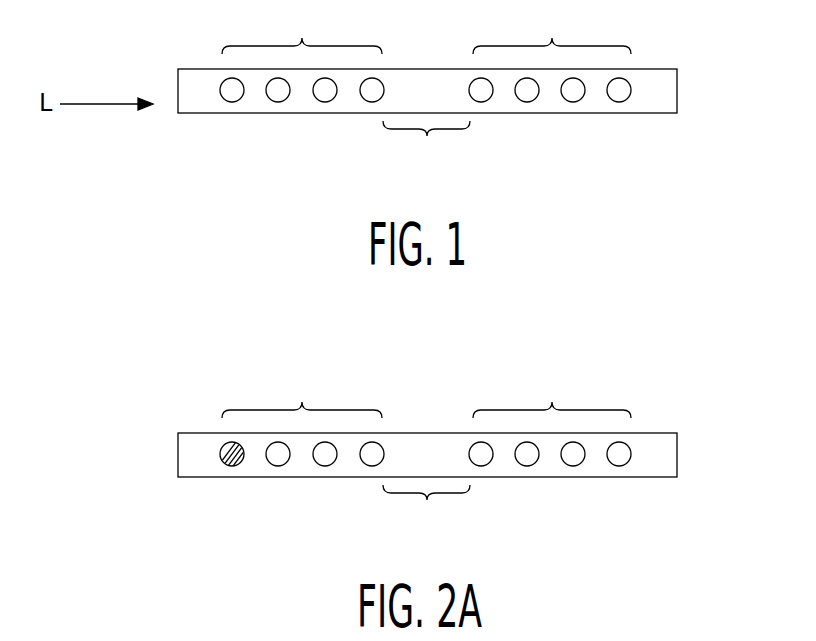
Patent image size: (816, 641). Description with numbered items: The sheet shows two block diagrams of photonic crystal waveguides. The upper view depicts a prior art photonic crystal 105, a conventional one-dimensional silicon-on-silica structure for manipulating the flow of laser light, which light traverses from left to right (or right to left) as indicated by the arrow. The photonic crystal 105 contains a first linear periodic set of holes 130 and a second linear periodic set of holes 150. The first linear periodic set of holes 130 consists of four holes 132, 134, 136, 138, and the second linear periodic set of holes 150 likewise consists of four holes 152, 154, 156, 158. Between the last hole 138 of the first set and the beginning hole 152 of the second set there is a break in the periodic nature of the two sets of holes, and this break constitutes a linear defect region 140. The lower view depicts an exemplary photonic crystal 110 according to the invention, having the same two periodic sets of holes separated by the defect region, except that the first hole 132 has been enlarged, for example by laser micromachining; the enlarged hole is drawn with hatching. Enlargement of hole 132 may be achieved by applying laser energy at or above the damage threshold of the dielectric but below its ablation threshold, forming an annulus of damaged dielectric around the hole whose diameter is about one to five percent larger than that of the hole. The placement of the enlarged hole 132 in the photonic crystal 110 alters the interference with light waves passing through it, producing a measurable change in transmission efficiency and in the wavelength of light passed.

In FIG. 1, the photonic crystal 105 is at (178, 77).
In FIG. 2A, the photonic crystal 110 is at (392, 434).
In FIG. 1, the first linear periodic set of holes 130 is at (302, 30).
In FIG. 2A, the first linear periodic set of holes 130 is at (302, 394).
In FIG. 1, the first hole 132 is at (222, 98).
In FIG. 2A, the first hole 132 is at (211, 478).
In FIG. 1, the hole 134 is at (269, 99).
In FIG. 2A, the hole 134 is at (243, 495).
In FIG. 1, the hole 136 is at (318, 100).
In FIG. 2A, the hole 136 is at (304, 485).
In FIG. 1, the last hole 138 is at (364, 100).
In FIG. 2A, the last hole 138 is at (358, 497).
In FIG. 1, the linear defect region 140 is at (426, 145).
In FIG. 2A, the linear defect region 140 is at (426, 509).
In FIG. 1, the second linear periodic set of holes 150 is at (552, 30).
In FIG. 2A, the second linear periodic set of holes 150 is at (552, 394).
In FIG. 1, the beginning hole 152 is at (488, 99).
In FIG. 2A, the beginning hole 152 is at (495, 494).
In FIG. 1, the hole 154 is at (534, 98).
In FIG. 2A, the hole 154 is at (549, 481).
In FIG. 1, the hole 156 is at (582, 97).
In FIG. 2A, the hole 156 is at (602, 496).
In FIG. 1, the hole 158 is at (631, 90).
In FIG. 2A, the hole 158 is at (655, 485).